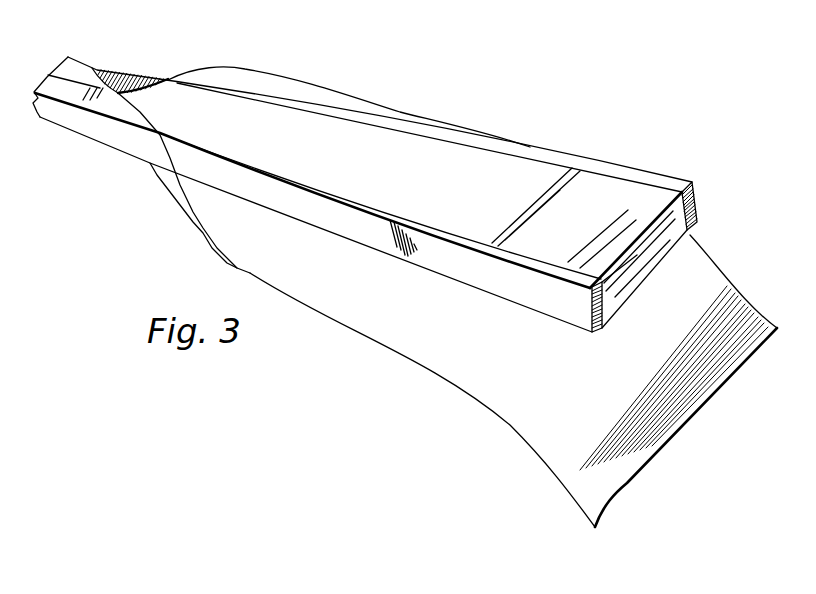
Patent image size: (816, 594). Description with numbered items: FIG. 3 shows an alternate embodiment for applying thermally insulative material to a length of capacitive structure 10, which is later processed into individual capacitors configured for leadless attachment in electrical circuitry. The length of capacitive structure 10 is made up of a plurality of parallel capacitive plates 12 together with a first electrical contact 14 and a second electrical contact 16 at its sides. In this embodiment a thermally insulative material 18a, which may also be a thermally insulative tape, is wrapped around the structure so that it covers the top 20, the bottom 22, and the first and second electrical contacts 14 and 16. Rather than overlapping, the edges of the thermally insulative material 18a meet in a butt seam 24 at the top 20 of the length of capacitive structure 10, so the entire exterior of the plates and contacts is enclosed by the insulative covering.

The length of capacitive structure 10 is at (602, 115).
The parallel capacitive plates 12 is at (657, 253).
The first electrical contact 14 is at (556, 302).
The second electrical contact 16 is at (697, 198).
The thermally insulative material 18a is at (387, 335).
The top 20 is at (628, 192).
The bottom 22 is at (618, 302).
The butt seam 24 is at (122, 66).